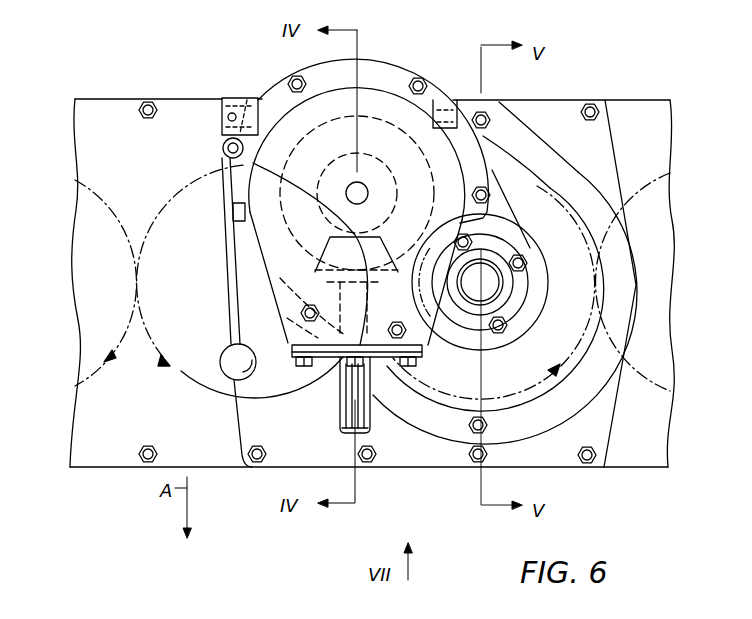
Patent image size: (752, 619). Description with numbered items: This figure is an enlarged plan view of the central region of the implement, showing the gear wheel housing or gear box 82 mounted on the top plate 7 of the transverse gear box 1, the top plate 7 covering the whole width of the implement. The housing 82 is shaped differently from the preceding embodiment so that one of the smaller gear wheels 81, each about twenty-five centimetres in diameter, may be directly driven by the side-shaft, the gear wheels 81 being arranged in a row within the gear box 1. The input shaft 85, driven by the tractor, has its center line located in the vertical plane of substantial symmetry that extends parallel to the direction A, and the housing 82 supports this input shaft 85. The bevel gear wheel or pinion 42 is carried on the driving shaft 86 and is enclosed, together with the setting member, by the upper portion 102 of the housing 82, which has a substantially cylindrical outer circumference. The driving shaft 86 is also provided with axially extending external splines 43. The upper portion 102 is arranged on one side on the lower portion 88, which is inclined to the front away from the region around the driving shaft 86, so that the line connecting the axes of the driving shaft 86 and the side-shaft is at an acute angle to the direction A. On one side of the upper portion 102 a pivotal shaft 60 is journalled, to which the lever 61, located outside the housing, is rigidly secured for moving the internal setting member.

The gear box 1 is at (637, 95).
The top plate 7 is at (655, 138).
The bevel gear wheel or pinion 42 is at (398, 115).
The external splines 43 is at (390, 212).
The pivotal shaft 60 is at (217, 118).
The lever 61 is at (230, 262).
The gear wheels 81 is at (172, 193).
The gear wheel housing or gear box 82 is at (542, 122).
The input shaft 85 is at (343, 410).
The driving shaft 86 is at (349, 157).
The lower portion 88 is at (563, 240).
The upper portion 102 is at (392, 76).